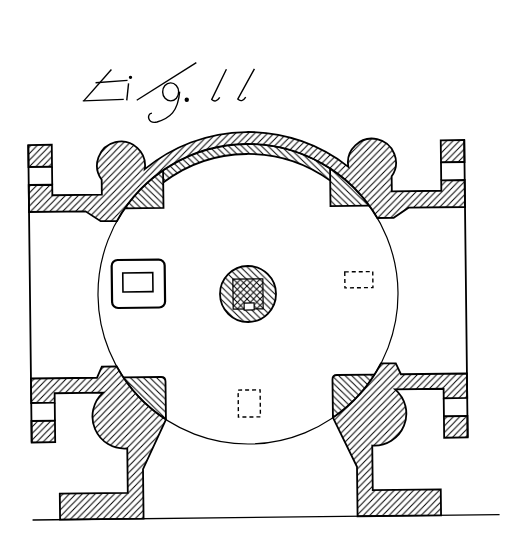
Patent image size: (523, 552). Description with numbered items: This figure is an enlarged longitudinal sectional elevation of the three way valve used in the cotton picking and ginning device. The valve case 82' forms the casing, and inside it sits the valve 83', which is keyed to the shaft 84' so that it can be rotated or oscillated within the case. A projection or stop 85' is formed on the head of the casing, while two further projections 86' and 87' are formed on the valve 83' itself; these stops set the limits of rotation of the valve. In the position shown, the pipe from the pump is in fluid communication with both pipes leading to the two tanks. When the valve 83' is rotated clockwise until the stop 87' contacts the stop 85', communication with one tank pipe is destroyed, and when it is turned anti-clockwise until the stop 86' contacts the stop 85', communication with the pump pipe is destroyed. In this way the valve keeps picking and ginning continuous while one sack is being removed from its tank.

The valve case 82' is at (246, 162).
The valve 83' is at (246, 176).
The shaft 84' is at (269, 294).
The projection or stop on the head of the casing 85' is at (272, 403).
The projection on the valve 86' is at (108, 290).
The projection on the valve 87' is at (396, 275).